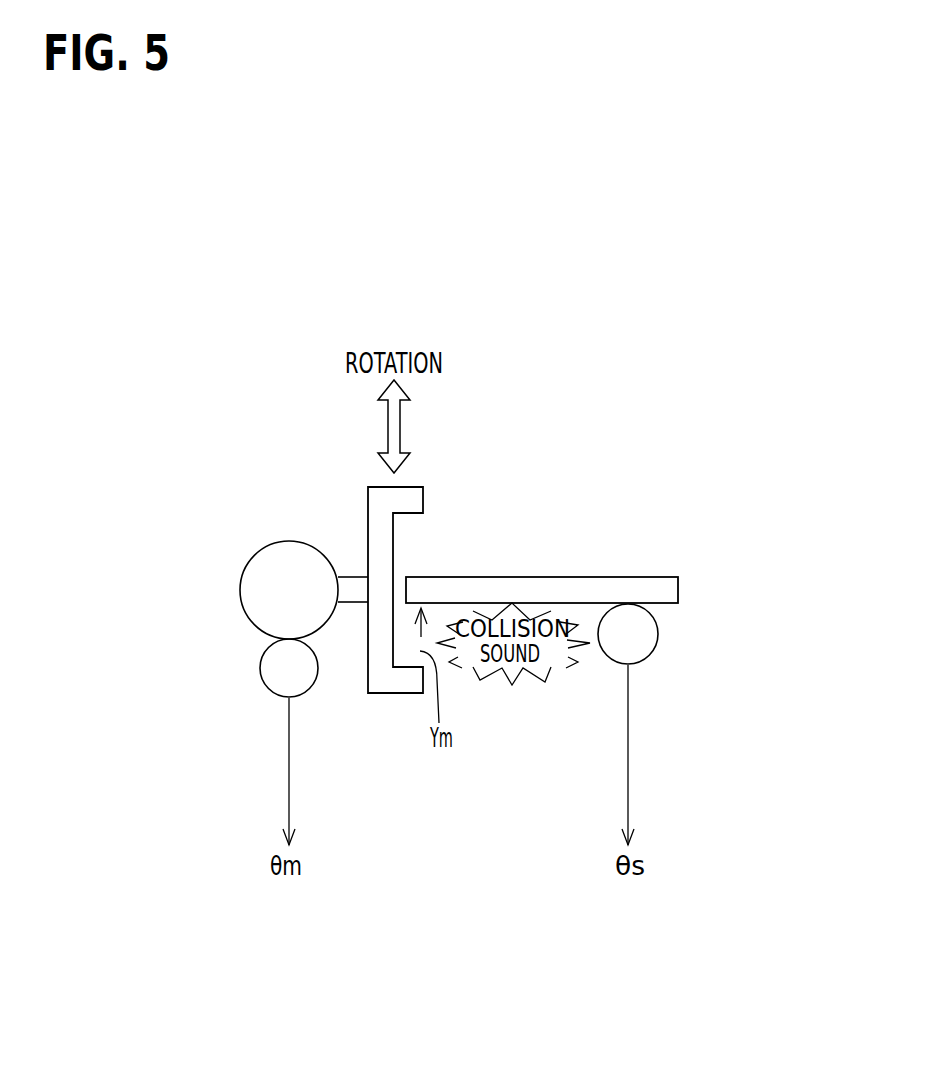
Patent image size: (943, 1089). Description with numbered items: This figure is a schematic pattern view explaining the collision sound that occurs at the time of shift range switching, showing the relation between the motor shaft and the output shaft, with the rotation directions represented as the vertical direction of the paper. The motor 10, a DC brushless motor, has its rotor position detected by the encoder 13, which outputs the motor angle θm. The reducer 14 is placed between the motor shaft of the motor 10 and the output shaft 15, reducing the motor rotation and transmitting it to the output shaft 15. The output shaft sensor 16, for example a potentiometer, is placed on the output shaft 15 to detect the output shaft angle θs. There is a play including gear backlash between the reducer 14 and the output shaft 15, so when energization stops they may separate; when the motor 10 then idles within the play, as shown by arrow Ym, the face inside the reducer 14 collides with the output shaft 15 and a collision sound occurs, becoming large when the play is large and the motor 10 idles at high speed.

The motor 10 is at (240, 590).
The encoder 13 is at (260, 668).
The reducer 14 is at (423, 500).
The output shaft 15 is at (601, 577).
The output shaft sensor 16 is at (659, 636).